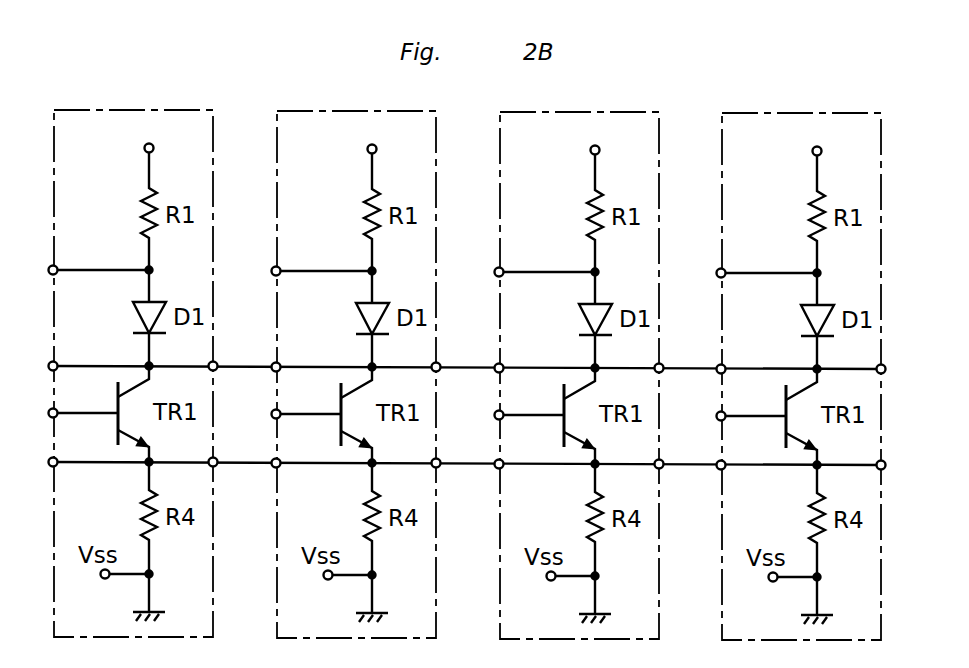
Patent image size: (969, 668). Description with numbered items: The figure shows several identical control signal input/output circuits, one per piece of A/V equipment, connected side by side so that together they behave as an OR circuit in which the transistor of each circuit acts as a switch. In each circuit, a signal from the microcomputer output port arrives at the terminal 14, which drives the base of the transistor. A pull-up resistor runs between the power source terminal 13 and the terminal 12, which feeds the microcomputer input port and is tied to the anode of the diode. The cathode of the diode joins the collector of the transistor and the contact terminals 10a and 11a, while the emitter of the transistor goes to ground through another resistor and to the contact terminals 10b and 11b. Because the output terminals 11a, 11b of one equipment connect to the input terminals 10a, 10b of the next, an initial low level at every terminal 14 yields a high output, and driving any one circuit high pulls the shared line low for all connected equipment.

The power source terminal 13 is at (145, 149).
The terminal 12 is at (57, 266).
The contact terminal 10a is at (57, 362).
The output terminal 11a is at (216, 362).
The terminal 14 is at (57, 409).
The contact terminal 10b is at (57, 466).
The output terminal 11b is at (216, 466).